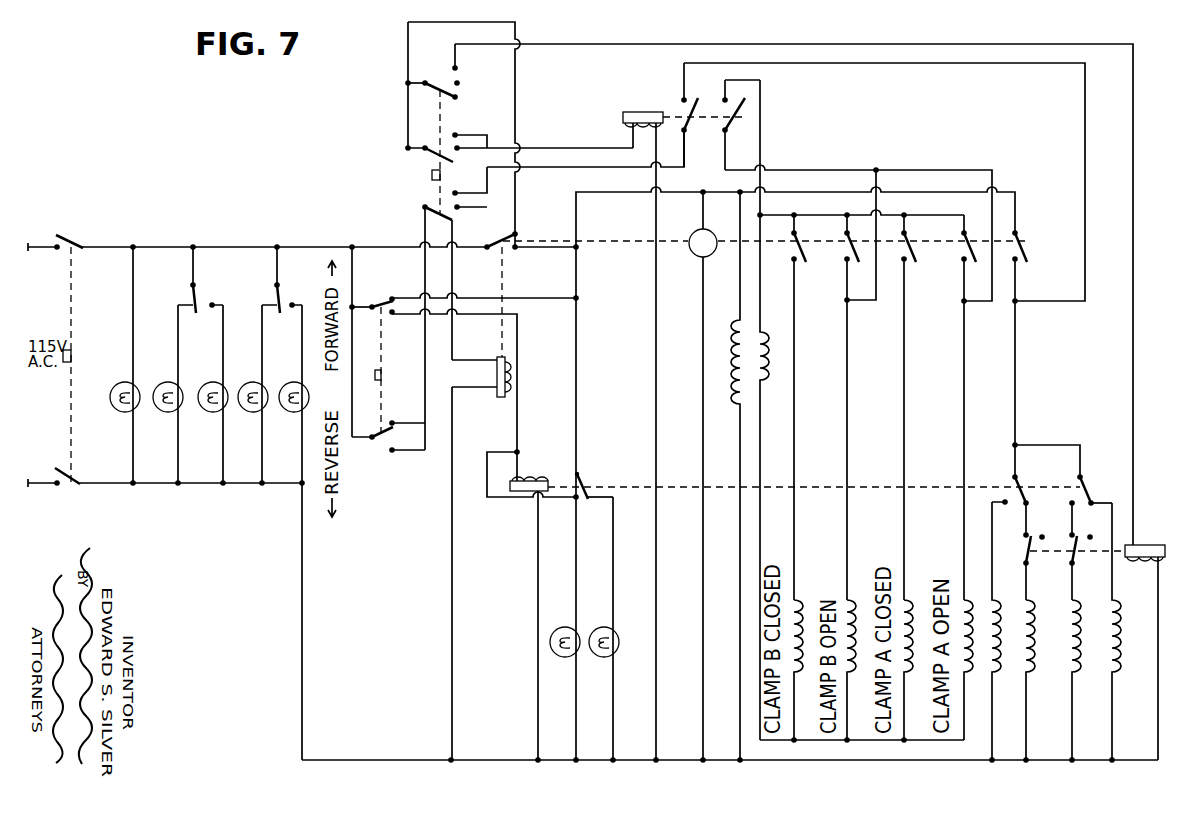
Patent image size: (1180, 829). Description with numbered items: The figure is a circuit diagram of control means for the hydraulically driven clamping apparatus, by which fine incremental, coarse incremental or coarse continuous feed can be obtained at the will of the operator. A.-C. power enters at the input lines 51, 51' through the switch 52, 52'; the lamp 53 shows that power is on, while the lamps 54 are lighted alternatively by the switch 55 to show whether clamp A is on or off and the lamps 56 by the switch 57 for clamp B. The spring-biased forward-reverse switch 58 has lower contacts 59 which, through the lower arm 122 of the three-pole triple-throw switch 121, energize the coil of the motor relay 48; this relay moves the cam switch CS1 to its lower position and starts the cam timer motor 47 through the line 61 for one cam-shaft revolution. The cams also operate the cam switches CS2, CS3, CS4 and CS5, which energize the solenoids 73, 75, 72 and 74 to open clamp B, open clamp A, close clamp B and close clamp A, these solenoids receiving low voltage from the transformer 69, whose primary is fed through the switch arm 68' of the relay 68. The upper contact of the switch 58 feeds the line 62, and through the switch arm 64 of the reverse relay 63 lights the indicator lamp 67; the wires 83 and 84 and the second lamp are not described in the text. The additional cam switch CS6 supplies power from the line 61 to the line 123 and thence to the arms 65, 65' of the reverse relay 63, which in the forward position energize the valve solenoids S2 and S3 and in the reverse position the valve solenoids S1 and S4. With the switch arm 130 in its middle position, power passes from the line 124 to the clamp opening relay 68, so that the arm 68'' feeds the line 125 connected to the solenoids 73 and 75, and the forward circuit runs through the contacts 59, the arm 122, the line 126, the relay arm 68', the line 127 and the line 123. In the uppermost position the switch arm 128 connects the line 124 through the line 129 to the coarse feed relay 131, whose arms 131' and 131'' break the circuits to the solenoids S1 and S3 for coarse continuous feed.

The cam timer motor 47 is at (696, 258).
The motor relay 48 is at (508, 376).
The input line 51 is at (44, 233).
The switch 52 is at (81, 232).
The input line 51' is at (44, 461).
The switch 52' is at (84, 466).
The lamp 53 is at (119, 382).
The lamps 54 is at (217, 384).
The switch 55 is at (195, 301).
The lamps 56 is at (301, 384).
The switch 57 is at (279, 301).
The double-pole double-throw switch 58 is at (375, 364).
The lower contacts 59 is at (392, 448).
The line 61 is at (621, 192).
The line 62 is at (537, 298).
The reverse relay 63 is at (532, 481).
The switch arm 64 is at (577, 477).
The switch arm 65 is at (1036, 474).
The switch arm 65' is at (1095, 480).
The indicator lamp 67 is at (613, 648).
The relay 68 is at (643, 424).
The switch arm 68' is at (700, 132).
The switch arm 68'' is at (731, 125).
The transformer 69 is at (737, 355).
The solenoid 72 is at (792, 602).
The solenoid 73 is at (845, 602).
The solenoid 74 is at (902, 602).
The solenoid 75 is at (962, 602).
The conductor 83 is at (523, 420).
The indicator lamp 84 is at (564, 658).
The three-pole triple-throw switch 121 is at (422, 184).
The lower arm 122 is at (440, 212).
The line 123 is at (1018, 333).
The line 124 is at (517, 104).
The line 125 is at (814, 170).
The line 126 is at (561, 168).
The line 127 is at (886, 63).
The switch arm 128 is at (453, 70).
The line 129 is at (622, 44).
The switch arm 130 is at (443, 148).
The coarse feed relay 131 is at (1152, 634).
The switch arm 131' is at (1092, 551).
The switch arm 131'' is at (1047, 551).
The cam switch CS1 is at (507, 238).
The cam switch CS2 is at (847, 238).
The cam switch CS3 is at (963, 237).
The cam switch CS4 is at (784, 407).
The cam switch CS5 is at (896, 407).
The cam switch CS6 is at (1035, 264).
The valve solenoid S1 is at (1068, 620).
The valve solenoid S2 is at (1116, 619).
The valve solenoid S3 is at (1029, 650).
The valve solenoid S4 is at (992, 673).